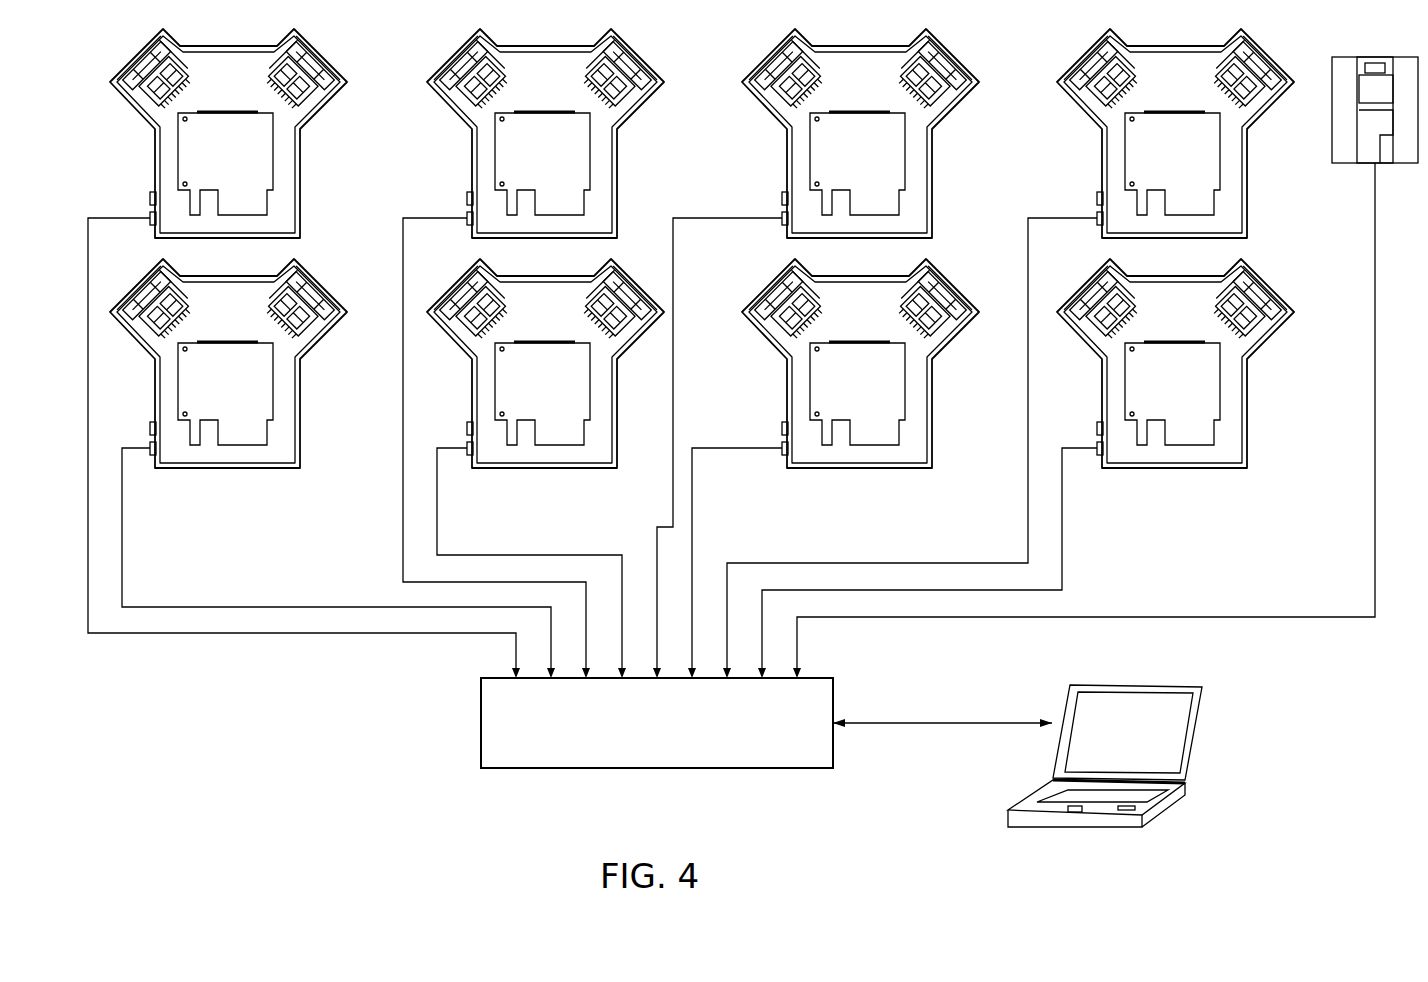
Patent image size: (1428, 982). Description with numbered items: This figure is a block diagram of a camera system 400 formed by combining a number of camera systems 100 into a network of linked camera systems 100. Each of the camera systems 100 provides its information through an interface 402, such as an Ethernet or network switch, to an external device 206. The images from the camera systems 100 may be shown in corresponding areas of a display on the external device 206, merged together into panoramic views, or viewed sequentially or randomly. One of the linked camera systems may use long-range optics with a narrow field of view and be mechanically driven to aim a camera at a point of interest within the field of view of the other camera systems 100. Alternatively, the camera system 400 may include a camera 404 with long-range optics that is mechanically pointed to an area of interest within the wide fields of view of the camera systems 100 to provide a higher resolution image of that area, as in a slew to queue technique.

The camera system 100 is at (427, 83).
The external device 206 is at (1183, 685).
The camera system 400 is at (300, 722).
The interface 402 is at (481, 688).
The camera 404 is at (1328, 76).